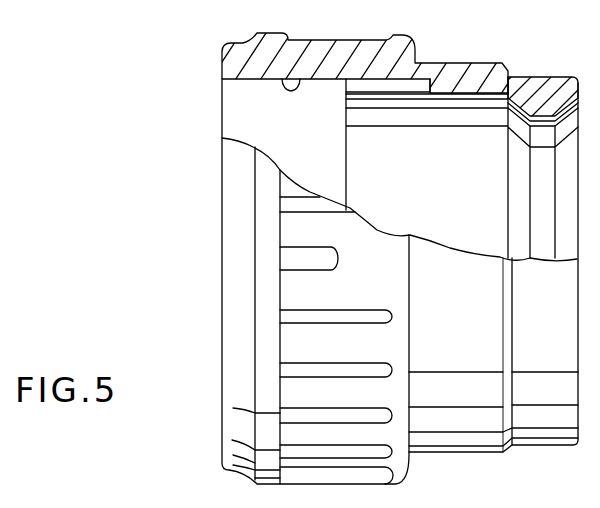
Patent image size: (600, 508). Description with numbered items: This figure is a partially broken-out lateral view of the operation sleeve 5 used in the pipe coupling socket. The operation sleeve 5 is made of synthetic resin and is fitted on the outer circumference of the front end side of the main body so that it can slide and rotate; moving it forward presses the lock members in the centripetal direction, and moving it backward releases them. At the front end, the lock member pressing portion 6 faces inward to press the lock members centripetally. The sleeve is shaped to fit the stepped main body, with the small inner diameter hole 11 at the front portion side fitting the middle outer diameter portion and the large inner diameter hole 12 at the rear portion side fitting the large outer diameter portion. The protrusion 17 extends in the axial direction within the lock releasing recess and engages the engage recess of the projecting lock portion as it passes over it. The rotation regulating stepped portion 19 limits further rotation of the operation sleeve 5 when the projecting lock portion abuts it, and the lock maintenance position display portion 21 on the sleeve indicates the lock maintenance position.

The operation sleeve 5 is at (446, 62).
The large inner diameter hole 12 is at (302, 82).
The protrusion 17 is at (380, 88).
The small inner diameter hole 11 is at (490, 103).
The lock member pressing portion 6 is at (543, 110).
The rotation regulating stepped portion 19 is at (349, 142).
The lock maintenance position display portion 21 is at (312, 260).